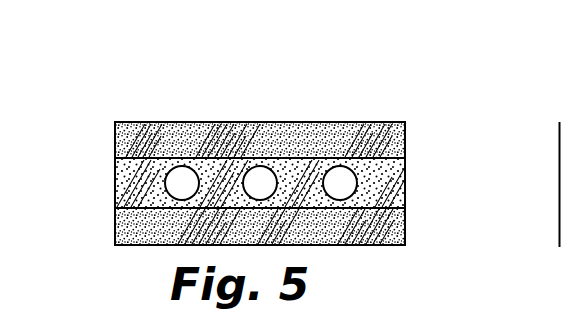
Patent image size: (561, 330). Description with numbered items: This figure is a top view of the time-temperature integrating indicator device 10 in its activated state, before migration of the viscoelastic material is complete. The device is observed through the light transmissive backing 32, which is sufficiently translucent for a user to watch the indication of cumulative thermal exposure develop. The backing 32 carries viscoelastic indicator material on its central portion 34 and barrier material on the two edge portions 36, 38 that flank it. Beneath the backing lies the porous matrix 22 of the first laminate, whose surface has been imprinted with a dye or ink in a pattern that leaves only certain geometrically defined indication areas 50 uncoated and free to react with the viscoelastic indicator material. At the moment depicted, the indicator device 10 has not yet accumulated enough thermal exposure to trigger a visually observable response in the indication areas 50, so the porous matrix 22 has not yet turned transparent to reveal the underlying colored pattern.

The time-temperature integrating indicator device 10 is at (158, 73).
The porous matrix 22 is at (123, 175).
The light transmissive backing 32 is at (206, 121).
The central portion 34 is at (405, 173).
The edge portion 36 is at (405, 136).
The edge portion 38 is at (405, 233).
The indication areas 50 is at (338, 180).